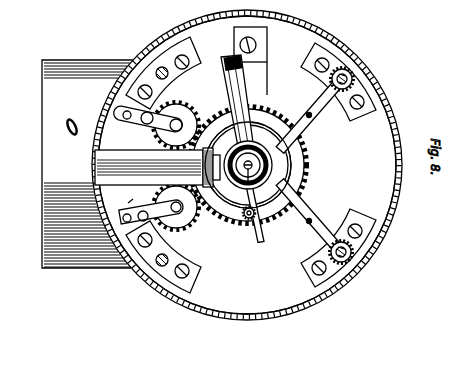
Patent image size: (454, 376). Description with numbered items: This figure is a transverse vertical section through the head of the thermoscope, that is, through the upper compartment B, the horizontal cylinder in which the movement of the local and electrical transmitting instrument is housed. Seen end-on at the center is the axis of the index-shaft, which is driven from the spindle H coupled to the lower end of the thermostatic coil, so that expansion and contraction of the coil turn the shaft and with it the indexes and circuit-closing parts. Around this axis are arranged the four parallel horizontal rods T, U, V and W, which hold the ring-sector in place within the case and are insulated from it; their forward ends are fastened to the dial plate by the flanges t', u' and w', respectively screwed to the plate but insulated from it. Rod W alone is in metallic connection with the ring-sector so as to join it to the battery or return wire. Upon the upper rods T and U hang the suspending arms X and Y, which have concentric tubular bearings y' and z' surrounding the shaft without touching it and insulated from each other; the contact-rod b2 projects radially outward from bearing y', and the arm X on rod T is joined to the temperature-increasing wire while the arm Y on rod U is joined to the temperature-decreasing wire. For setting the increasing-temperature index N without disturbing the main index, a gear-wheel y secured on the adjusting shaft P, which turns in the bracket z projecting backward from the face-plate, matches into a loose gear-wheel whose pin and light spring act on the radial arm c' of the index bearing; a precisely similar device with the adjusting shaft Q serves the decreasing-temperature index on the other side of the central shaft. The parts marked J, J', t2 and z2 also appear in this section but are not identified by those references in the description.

The horizontal rod V is at (157, 34).
The upper compartment B is at (264, 318).
The main gear wheel z2 is at (248, 177).
The tubular bearing z' is at (170, 73).
The horizontal rod W is at (160, 313).
The flange w' is at (182, 275).
The horizontal rod T is at (343, 58).
The horizontal rod U is at (347, 305).
The suspending arm X is at (317, 107).
The gear-wheel y is at (310, 217).
The flange t' is at (355, 97).
The flange u' is at (325, 263).
The bracket z is at (176, 120).
The tubular bearing y' is at (176, 213).
The adjusting shaft Q is at (148, 124).
The increasing-temperature index N is at (151, 212).
The adjusting shaft P is at (138, 196).
The rod J is at (157, 167).
The inner rod J' is at (149, 165).
The top plate t2 is at (250, 61).
The radial arm c' is at (250, 150).
The spindle H is at (235, 190).
The contact-rod b2 is at (248, 233).
The suspending arm Y is at (247, 262).